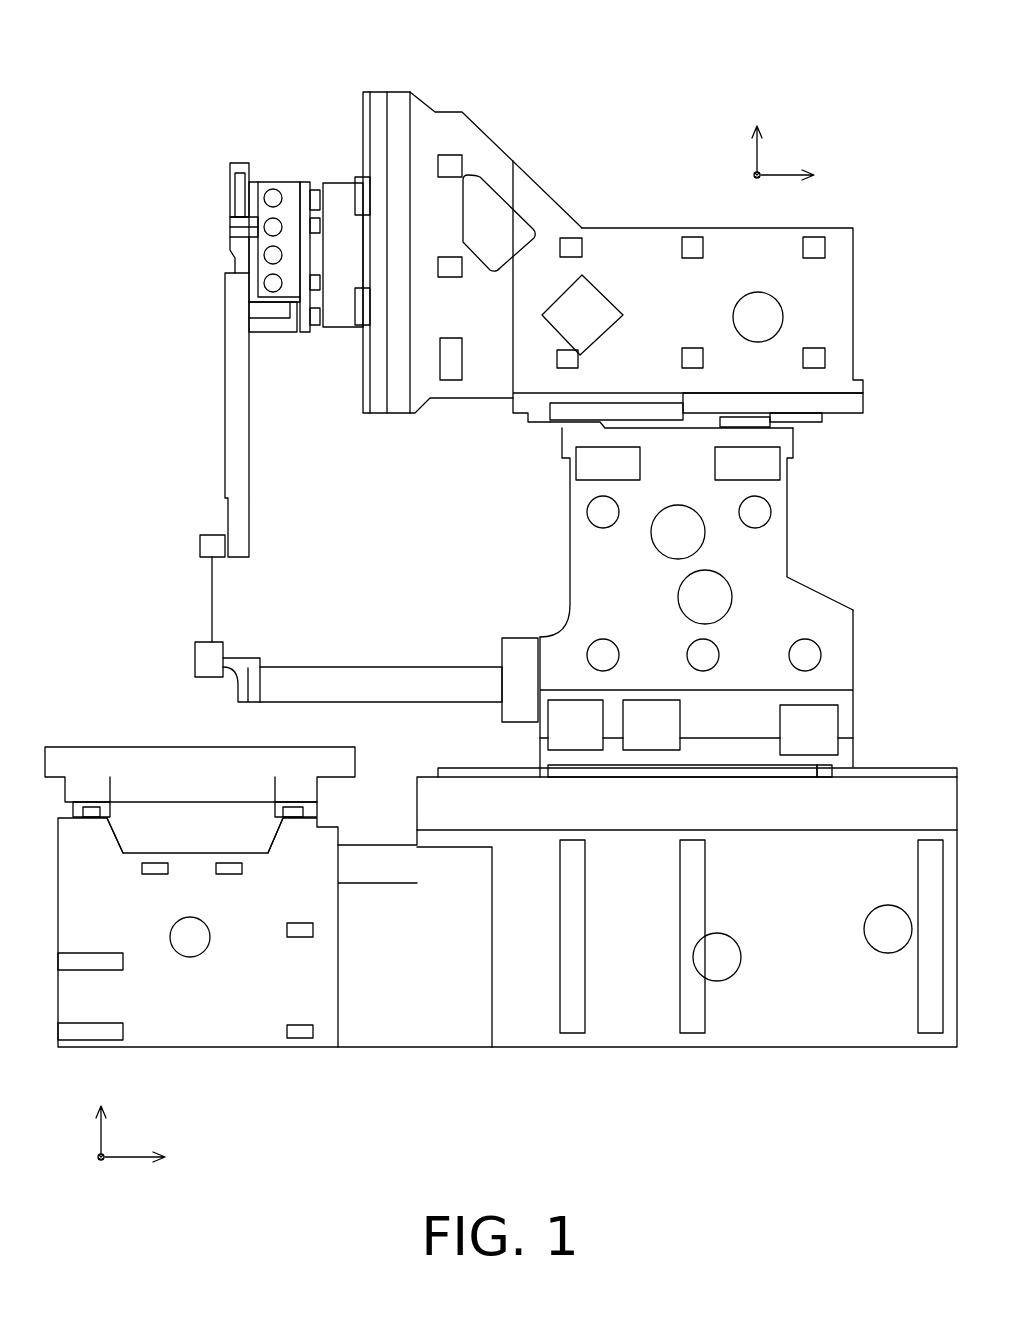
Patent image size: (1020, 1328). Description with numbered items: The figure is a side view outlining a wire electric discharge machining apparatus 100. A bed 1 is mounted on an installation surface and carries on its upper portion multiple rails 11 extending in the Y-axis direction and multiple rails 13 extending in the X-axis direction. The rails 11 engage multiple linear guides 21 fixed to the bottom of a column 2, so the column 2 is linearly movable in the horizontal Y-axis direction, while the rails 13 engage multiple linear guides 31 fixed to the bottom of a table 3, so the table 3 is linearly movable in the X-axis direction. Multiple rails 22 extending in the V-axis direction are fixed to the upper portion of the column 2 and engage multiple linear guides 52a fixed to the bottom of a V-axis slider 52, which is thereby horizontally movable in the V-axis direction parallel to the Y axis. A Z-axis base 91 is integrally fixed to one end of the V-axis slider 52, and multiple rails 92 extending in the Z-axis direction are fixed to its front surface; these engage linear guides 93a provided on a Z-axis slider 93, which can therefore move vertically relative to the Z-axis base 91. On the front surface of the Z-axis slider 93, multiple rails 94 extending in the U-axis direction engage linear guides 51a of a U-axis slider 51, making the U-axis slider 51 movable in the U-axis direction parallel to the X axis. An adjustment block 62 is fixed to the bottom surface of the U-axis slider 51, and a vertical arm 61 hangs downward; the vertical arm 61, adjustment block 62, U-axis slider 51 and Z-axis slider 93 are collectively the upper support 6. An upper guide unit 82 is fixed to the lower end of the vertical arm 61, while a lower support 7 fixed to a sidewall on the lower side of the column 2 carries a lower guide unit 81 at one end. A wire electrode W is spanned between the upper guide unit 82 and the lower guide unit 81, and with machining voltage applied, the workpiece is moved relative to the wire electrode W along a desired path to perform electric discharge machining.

The wire electric discharge machining apparatus 100 is at (455, 31).
The bed 1 is at (428, 1032).
The rails 11 is at (898, 773).
The rails 13 is at (112, 822).
The column 2 is at (838, 603).
The linear guides 21 is at (783, 773).
The rails 22 is at (793, 433).
The table 3 is at (188, 748).
The linear guides 31 is at (92, 802).
The U-axis slider 51 is at (272, 195).
The linear guides 51a is at (312, 188).
The V-axis slider 52 is at (645, 240).
The linear guides 52a is at (755, 412).
The upper support 6 is at (184, 169).
The vertical arm 61 is at (238, 390).
The adjustment block 62 is at (268, 333).
The lower support 7 is at (407, 682).
The lower guide unit 81 is at (248, 660).
The upper guide unit 82 is at (213, 550).
The Z-axis base 91 is at (473, 140).
The rails 92 is at (375, 92).
The Z-axis slider 93 is at (343, 328).
The linear guides 93a is at (357, 180).
The rails 94 is at (302, 328).
The wire electrode W is at (210, 598).